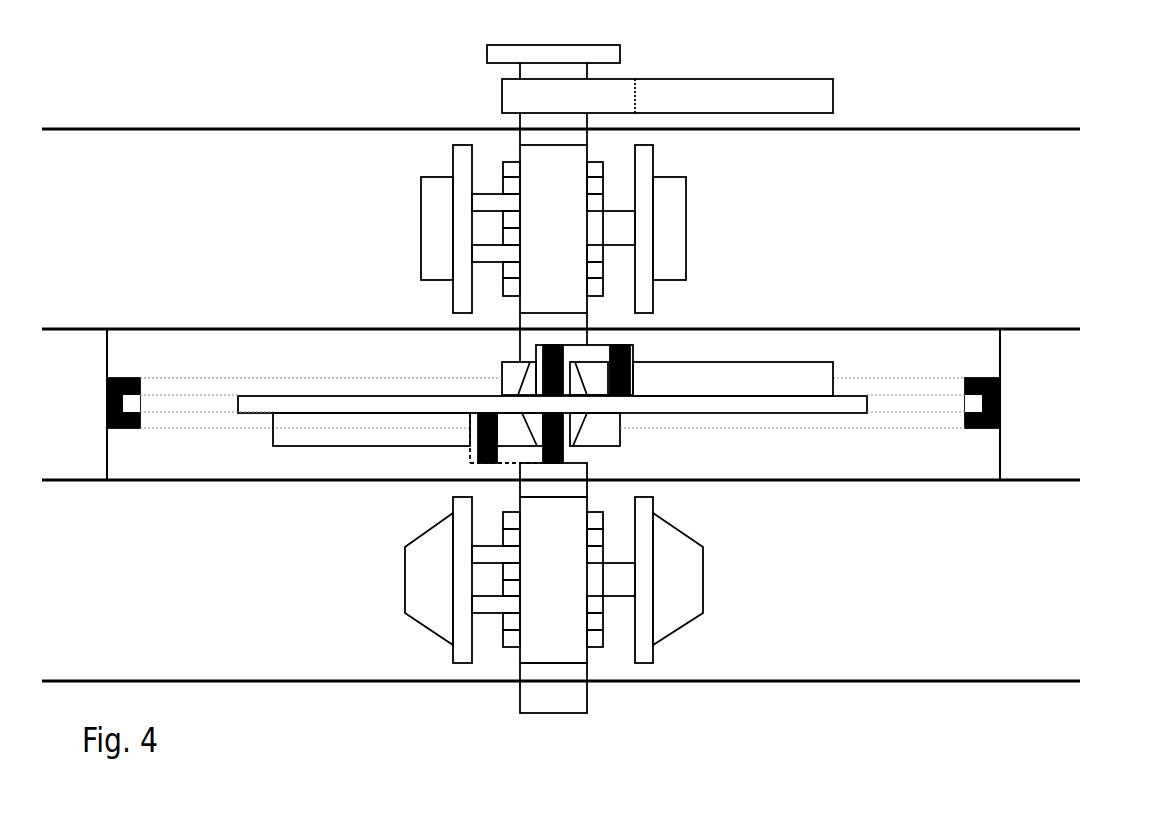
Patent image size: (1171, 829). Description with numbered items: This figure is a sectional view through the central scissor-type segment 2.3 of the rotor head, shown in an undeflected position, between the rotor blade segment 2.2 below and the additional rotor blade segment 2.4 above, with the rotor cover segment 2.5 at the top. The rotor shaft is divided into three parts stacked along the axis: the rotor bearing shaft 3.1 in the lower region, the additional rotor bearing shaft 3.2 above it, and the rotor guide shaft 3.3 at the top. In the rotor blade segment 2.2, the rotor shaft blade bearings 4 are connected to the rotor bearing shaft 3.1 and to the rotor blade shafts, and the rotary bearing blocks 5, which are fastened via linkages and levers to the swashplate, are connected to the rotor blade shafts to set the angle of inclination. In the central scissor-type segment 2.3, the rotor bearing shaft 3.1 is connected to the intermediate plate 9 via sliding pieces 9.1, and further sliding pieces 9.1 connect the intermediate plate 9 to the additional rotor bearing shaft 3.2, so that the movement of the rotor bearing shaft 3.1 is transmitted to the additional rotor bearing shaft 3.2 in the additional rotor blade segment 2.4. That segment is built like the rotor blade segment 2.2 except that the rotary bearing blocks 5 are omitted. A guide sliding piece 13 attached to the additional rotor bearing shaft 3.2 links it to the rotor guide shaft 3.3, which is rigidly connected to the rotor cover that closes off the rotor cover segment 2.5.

The rotor blade segment 2.2 is at (1050, 585).
The central scissor-type segment 2.3 is at (1050, 407).
The additional rotor blade segment 2.4 is at (1050, 228).
The rotor cover segment 2.5 is at (1050, 100).
The rotor bearing shaft 3.1 is at (597, 666).
The additional rotor bearing shaft 3.2 is at (510, 153).
The rotor guide shaft 3.3 is at (612, 70).
The rotor shaft blade bearings 4 is at (660, 503).
The rotary bearing blocks 5 is at (700, 630).
The intermediate plate 9 is at (807, 430).
The sliding pieces 9.1 is at (272, 452).
The guide sliding piece 13 is at (730, 70).